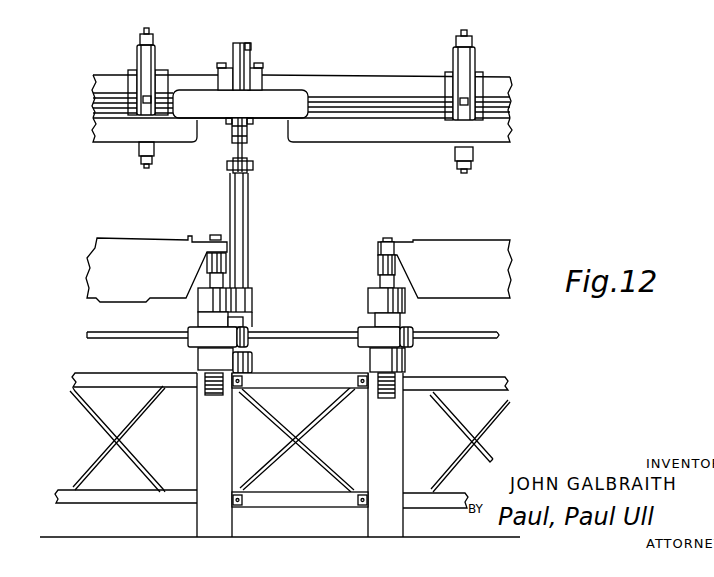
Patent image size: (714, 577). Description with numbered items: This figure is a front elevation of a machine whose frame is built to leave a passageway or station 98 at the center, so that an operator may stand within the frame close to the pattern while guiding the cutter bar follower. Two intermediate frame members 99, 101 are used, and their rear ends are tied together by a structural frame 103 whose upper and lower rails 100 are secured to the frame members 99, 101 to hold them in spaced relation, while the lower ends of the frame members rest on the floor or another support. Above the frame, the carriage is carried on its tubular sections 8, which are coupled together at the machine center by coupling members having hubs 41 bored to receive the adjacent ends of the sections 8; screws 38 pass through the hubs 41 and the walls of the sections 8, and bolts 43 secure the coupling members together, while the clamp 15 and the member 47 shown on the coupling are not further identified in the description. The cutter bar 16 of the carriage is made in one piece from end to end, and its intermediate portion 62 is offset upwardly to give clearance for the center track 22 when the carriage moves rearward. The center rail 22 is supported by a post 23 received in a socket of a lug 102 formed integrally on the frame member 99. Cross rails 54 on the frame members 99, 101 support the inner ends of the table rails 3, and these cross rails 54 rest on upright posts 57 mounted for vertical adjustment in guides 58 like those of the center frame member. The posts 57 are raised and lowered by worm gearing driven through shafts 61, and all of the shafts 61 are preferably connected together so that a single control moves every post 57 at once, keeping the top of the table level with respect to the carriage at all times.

The front rail 3 is at (124, 247).
The tubular section 8 is at (97, 79).
The clamp 15 is at (146, 64).
The cutter bar 16 is at (432, 144).
The track 22 is at (250, 151).
The post 23 is at (250, 233).
The screw 38 is at (219, 64).
The hub 41 is at (221, 75).
The bolt 43 is at (252, 47).
The shaft 47 is at (244, 31).
The cross rail 54 is at (236, 269).
The upright post 57 is at (204, 392).
The guide 58 is at (200, 297).
The shaft 61 is at (135, 333).
The intermediate portion 62 is at (283, 98).
The passageway 98 is at (358, 479).
The intermediate frame member 99 is at (200, 517).
The rail 100 is at (308, 386).
The intermediate frame member 101 is at (396, 536).
The lug 102 is at (252, 311).
The structural frame 103 is at (302, 366).